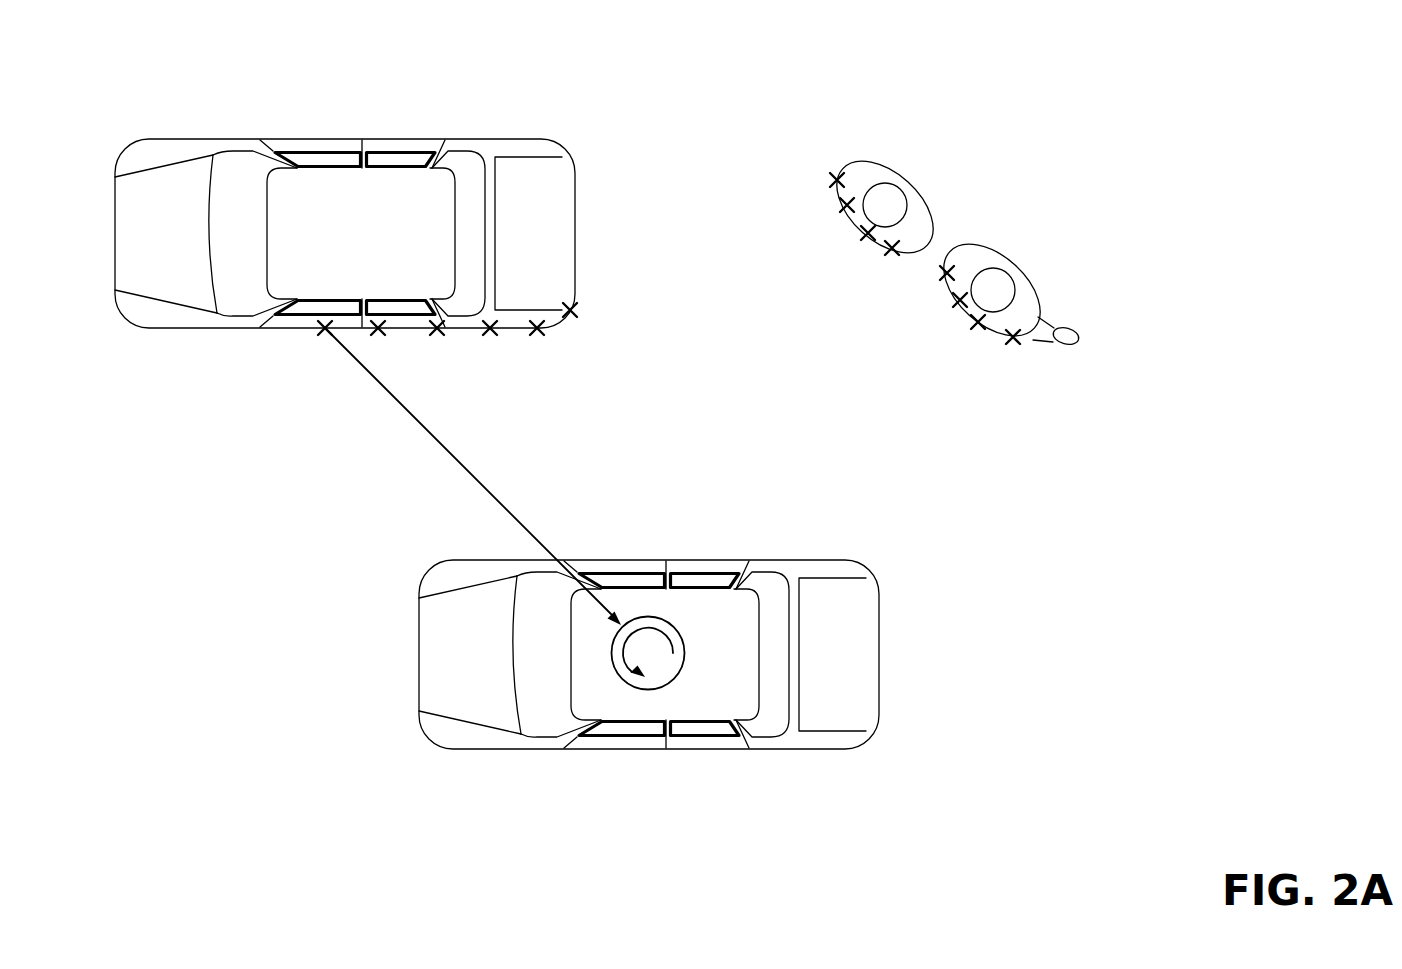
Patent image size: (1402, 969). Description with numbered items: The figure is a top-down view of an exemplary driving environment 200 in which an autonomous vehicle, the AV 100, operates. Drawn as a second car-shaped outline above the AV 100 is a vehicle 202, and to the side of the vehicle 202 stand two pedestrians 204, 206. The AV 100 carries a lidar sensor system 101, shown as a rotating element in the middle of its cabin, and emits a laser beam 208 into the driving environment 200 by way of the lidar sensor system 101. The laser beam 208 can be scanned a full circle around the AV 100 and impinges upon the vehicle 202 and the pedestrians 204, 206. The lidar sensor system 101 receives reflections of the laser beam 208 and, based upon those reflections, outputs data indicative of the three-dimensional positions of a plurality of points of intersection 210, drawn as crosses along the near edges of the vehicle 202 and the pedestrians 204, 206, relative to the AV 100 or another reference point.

The driving environment 200 is at (113, 46).
The vehicle 202 is at (576, 167).
The pedestrian 204 is at (908, 181).
The pedestrian 206 is at (1015, 265).
The laser beam 208 is at (510, 512).
The points of intersection 210 is at (539, 331).
The autonomous vehicle 100 is at (868, 572).
The lidar sensor system 101 is at (648, 616).